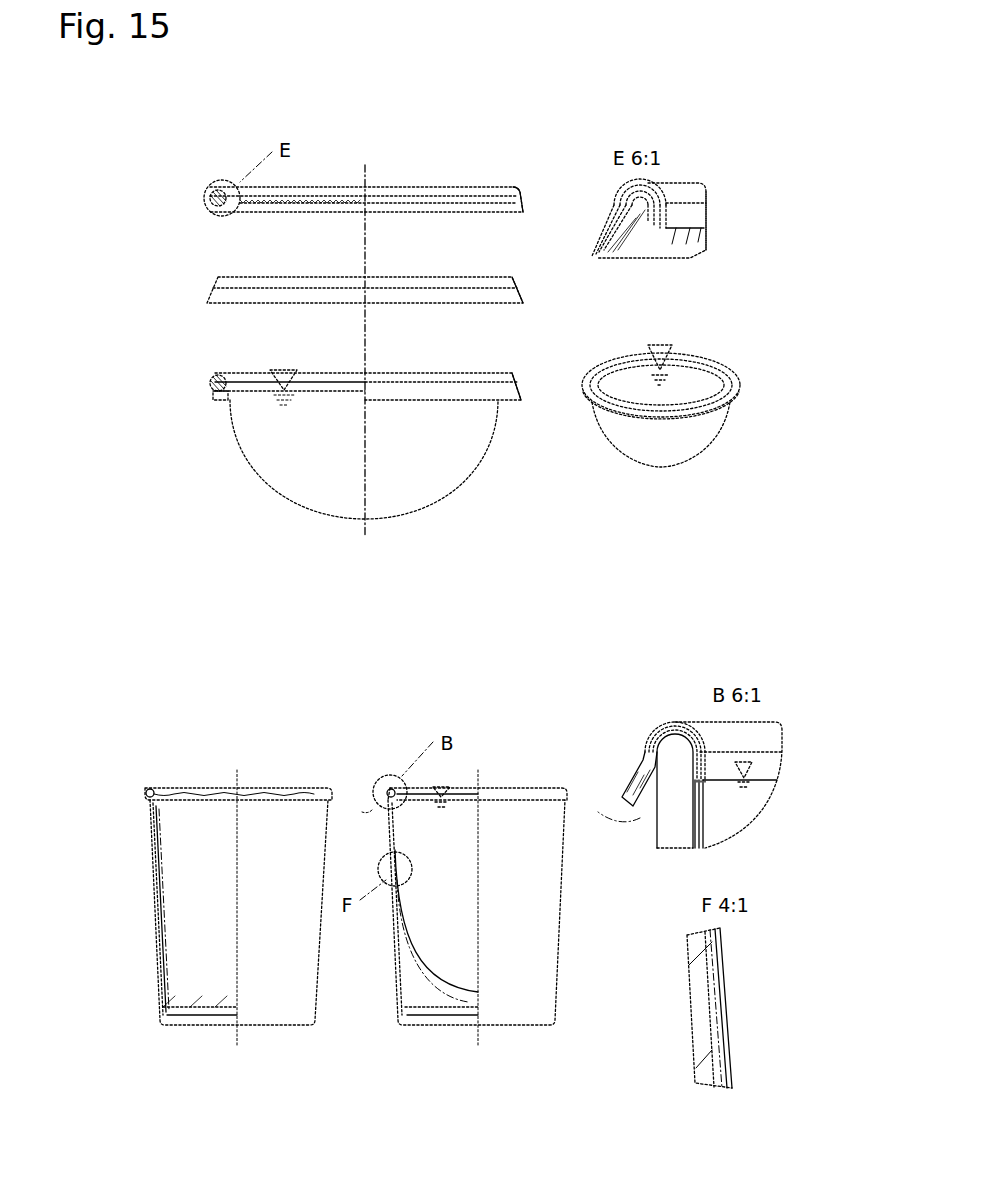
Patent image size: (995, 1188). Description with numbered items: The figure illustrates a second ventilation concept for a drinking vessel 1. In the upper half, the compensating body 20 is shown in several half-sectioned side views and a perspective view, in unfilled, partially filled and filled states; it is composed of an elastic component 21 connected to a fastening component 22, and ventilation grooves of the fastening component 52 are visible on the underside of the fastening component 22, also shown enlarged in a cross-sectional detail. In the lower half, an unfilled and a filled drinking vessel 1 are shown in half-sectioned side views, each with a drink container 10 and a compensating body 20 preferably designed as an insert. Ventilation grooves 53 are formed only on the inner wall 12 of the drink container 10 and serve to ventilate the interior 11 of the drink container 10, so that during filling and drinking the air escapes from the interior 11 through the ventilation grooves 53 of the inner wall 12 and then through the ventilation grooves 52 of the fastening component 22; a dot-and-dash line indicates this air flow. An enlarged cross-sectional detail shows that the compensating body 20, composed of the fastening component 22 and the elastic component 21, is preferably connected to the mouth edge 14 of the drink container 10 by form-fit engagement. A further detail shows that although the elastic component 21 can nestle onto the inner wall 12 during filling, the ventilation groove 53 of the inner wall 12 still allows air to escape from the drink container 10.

The drinking vessel 1 is at (310, 745).
The drink container 10 is at (157, 962).
The interior of the drink container 11 is at (180, 987).
The inner wall of the drink container 12 is at (158, 897).
The mouth edge 14 is at (675, 752).
The compensating body 20 is at (430, 172).
The elastic component 21 is at (278, 212).
The fastening component 22 is at (487, 195).
The ventilation grooves of the fastening component 52 is at (212, 205).
The ventilation grooves of the inner wall 53 is at (162, 938).